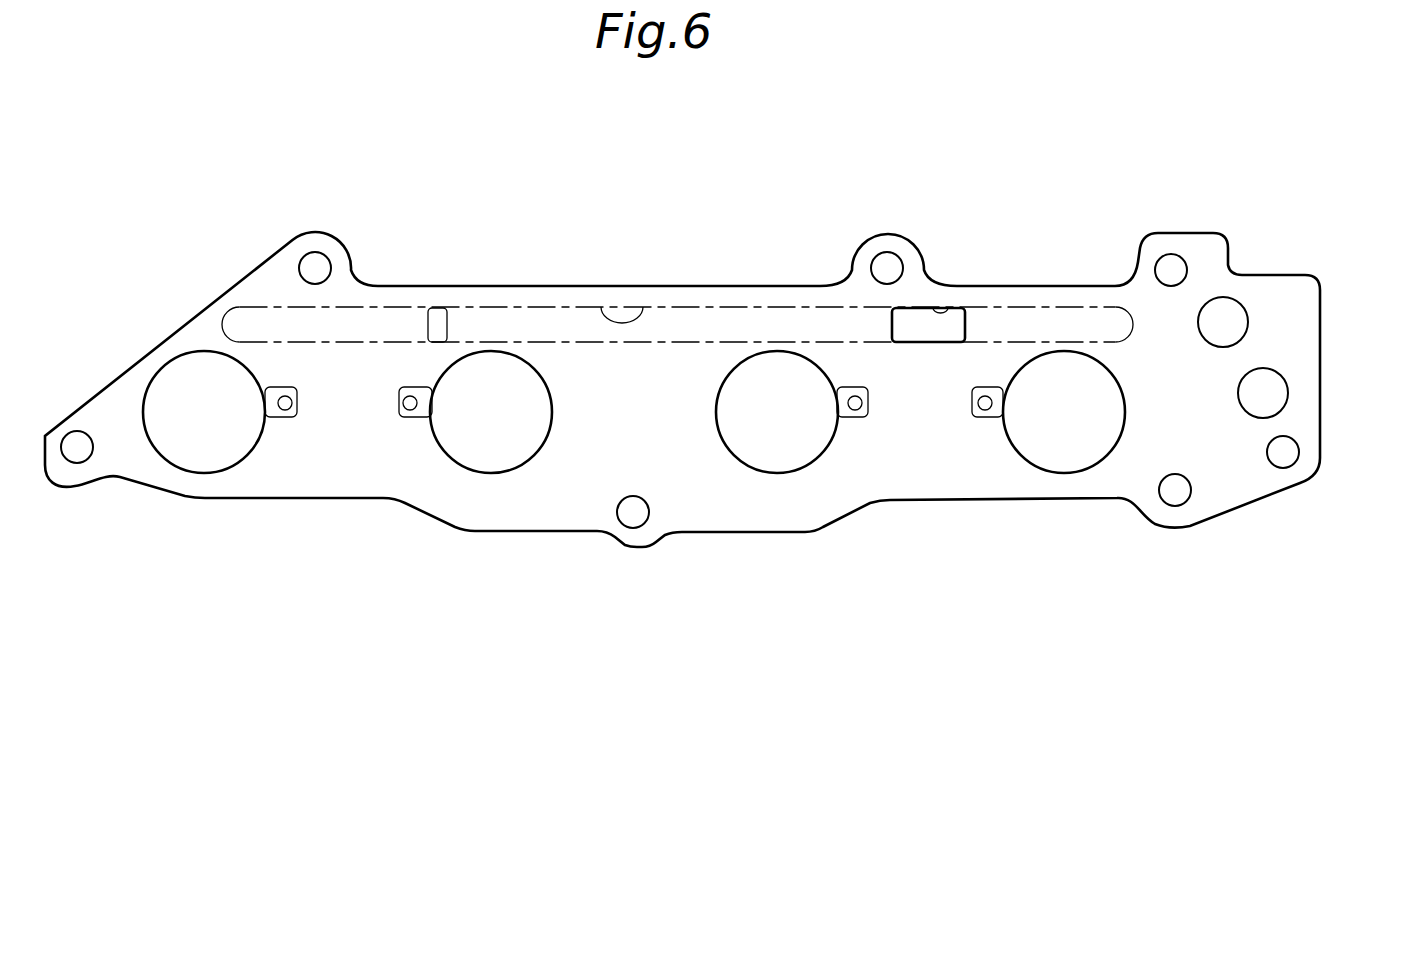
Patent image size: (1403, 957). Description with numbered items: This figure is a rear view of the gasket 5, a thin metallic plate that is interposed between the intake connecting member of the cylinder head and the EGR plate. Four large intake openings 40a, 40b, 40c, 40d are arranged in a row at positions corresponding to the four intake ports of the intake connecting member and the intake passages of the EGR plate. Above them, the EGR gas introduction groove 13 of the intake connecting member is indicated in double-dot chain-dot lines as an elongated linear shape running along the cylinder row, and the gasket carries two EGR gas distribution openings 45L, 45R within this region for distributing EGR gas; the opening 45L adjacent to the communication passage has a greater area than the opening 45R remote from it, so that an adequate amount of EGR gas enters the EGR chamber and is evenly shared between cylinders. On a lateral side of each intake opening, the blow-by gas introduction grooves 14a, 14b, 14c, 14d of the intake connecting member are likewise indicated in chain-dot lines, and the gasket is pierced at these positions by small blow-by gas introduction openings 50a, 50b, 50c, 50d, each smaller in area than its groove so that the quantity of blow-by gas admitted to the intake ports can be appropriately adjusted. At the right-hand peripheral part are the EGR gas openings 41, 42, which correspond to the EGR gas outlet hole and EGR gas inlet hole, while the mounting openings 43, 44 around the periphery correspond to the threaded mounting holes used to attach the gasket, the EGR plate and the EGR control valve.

The gasket 5 is at (1255, 165).
The EGR gas introduction groove 13 is at (641, 305).
The blow-by gas introduction groove 14a is at (975, 392).
The blow-by gas introduction groove 14b is at (840, 392).
The blow-by gas introduction groove 14c is at (402, 393).
The blow-by gas introduction groove 14d is at (272, 390).
The intake opening 40a is at (1064, 468).
The intake opening 40b is at (800, 468).
The intake opening 40c is at (497, 470).
The intake opening 40d is at (208, 468).
The EGR gas opening 41 is at (1280, 385).
The EGR gas opening 42 is at (1235, 312).
The mounting opening 43 is at (316, 262).
The mounting opening 44 is at (1173, 262).
The EGR gas distribution opening 45L is at (945, 312).
The EGR gas distribution opening 45R is at (447, 313).
The blow-by gas introduction opening 50a is at (985, 410).
The blow-by gas introduction opening 50b is at (858, 410).
The blow-by gas introduction opening 50c is at (410, 410).
The blow-by gas introduction opening 50d is at (286, 410).